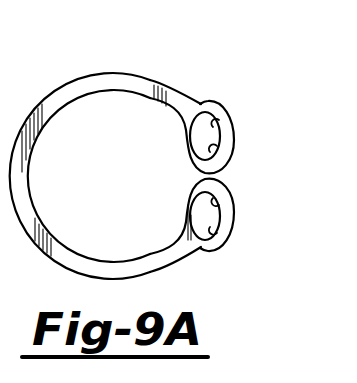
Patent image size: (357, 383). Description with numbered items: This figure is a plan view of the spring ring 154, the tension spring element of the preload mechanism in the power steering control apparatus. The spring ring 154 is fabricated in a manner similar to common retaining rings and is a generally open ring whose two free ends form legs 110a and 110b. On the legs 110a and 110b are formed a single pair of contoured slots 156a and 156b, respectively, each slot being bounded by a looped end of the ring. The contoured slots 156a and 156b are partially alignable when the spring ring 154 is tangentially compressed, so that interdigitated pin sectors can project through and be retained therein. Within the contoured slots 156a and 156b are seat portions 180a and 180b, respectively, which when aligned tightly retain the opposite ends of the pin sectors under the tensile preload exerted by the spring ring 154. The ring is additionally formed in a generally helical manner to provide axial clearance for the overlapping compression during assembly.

The spring ring 154 is at (136, 82).
The leg 110a is at (206, 103).
The leg 110b is at (218, 246).
The contoured slot 156a is at (216, 124).
The contoured slot 156b is at (213, 244).
The seat portion 180a is at (214, 150).
The seat portion 180b is at (215, 201).